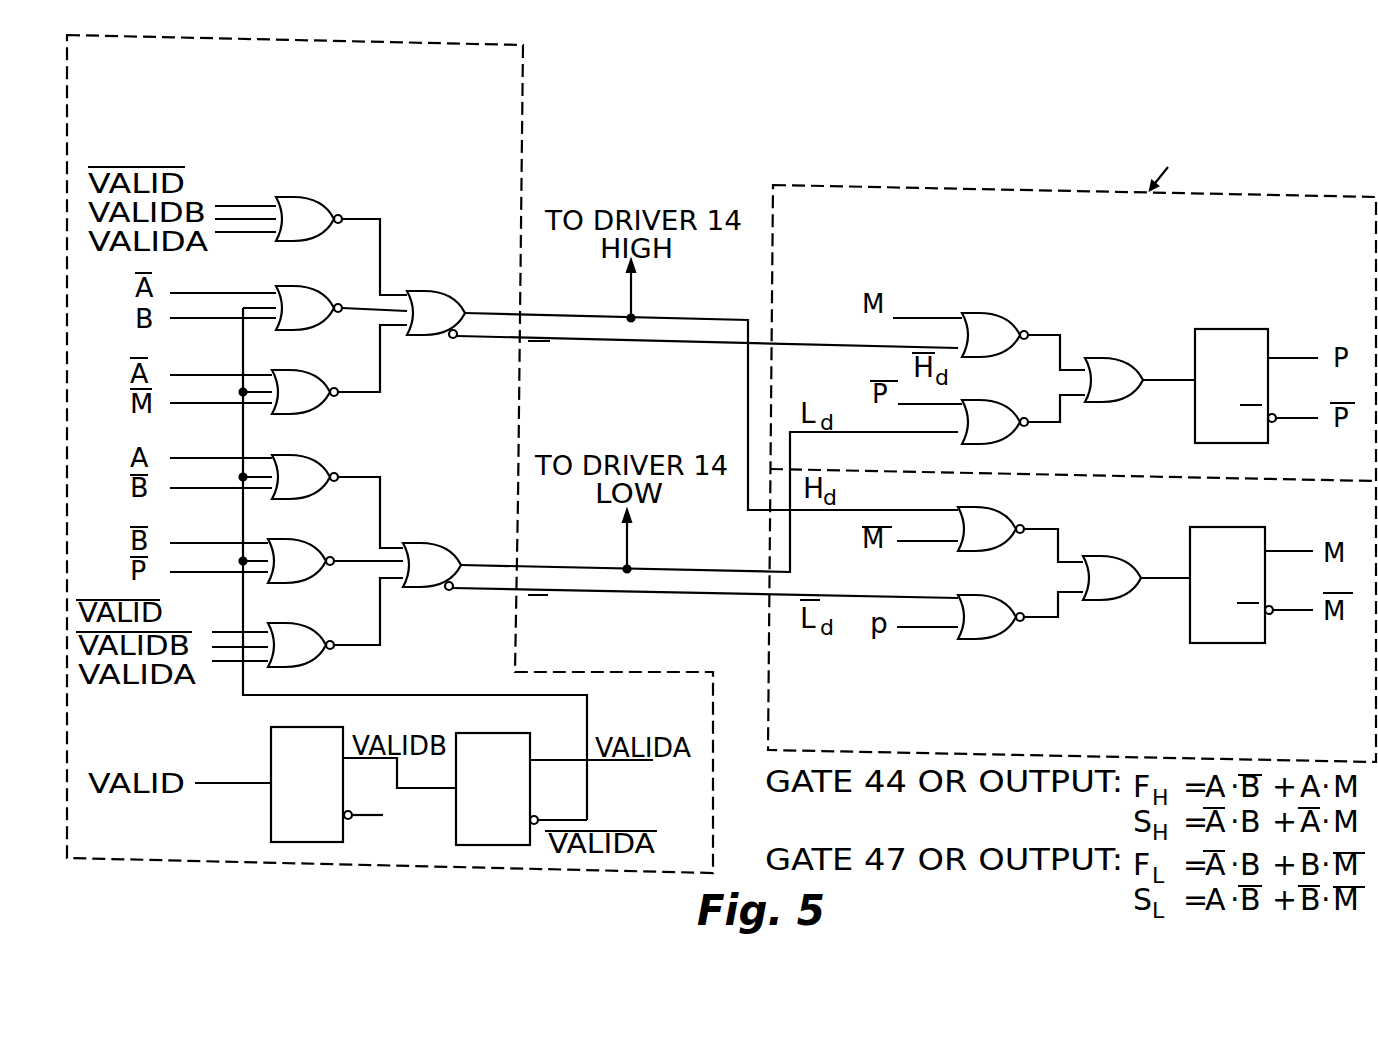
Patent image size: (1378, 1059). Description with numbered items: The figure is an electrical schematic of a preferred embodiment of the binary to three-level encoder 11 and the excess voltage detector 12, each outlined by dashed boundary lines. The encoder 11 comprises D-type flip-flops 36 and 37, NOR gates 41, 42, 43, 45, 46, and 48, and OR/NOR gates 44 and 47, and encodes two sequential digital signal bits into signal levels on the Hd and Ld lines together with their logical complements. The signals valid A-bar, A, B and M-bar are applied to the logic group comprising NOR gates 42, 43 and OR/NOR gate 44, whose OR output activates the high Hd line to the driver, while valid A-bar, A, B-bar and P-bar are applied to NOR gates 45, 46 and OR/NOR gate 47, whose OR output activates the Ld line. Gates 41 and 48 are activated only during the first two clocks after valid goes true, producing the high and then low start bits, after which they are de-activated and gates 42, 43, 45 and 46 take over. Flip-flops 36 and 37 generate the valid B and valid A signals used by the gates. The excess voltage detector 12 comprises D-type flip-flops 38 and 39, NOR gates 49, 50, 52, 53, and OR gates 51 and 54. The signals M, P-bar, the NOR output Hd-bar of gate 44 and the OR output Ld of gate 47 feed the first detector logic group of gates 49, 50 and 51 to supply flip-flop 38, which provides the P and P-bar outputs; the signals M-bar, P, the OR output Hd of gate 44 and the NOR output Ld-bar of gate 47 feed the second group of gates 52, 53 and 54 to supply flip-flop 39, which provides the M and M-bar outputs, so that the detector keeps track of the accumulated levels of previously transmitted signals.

The binary to 3-level encoder 11 is at (524, 82).
The excess voltage detector 12 is at (1060, 186).
The D-type flip-flop 36 is at (307, 727).
The D-type flip-flop 37 is at (494, 733).
The D-type flip-flop 38 is at (1222, 329).
The D-type flip-flop 39 is at (1226, 527).
The NOR gate 41 is at (294, 197).
The NOR gate 42 is at (294, 286).
The NOR gate 43 is at (290, 370).
The OR/NOR gate 44 is at (428, 291).
The NOR gate 45 is at (289, 455).
The NOR gate 46 is at (286, 539).
The OR/NOR gate 47 is at (430, 543).
The NOR gate 48 is at (289, 623).
The NOR gate 49 is at (988, 313).
The NOR gate 50 is at (988, 400).
The OR gate 51 is at (1147, 348).
The NOR gate 52 is at (986, 509).
The NOR gate 53 is at (983, 595).
The OR gate 54 is at (1143, 548).